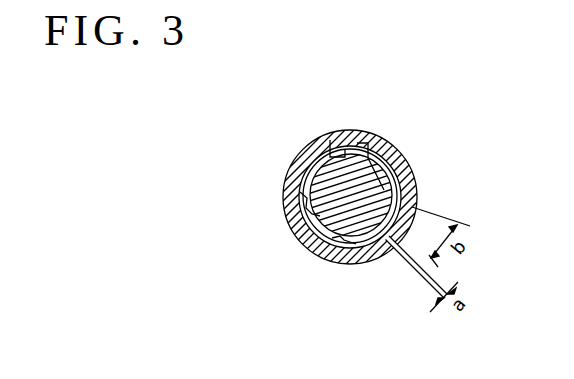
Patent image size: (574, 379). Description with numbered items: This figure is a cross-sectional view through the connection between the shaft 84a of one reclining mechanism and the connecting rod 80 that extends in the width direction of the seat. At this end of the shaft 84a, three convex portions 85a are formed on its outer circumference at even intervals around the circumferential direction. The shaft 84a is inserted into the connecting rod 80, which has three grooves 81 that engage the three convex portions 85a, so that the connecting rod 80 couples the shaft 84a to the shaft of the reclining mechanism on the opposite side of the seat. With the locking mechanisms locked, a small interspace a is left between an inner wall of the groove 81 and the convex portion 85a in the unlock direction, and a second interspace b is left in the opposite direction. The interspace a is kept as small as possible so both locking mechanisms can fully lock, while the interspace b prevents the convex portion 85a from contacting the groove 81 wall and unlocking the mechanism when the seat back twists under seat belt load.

The connecting rod 80 is at (288, 178).
The groove 81 is at (343, 148).
The convex portion 85a is at (372, 147).
The shaft 84a is at (417, 173).